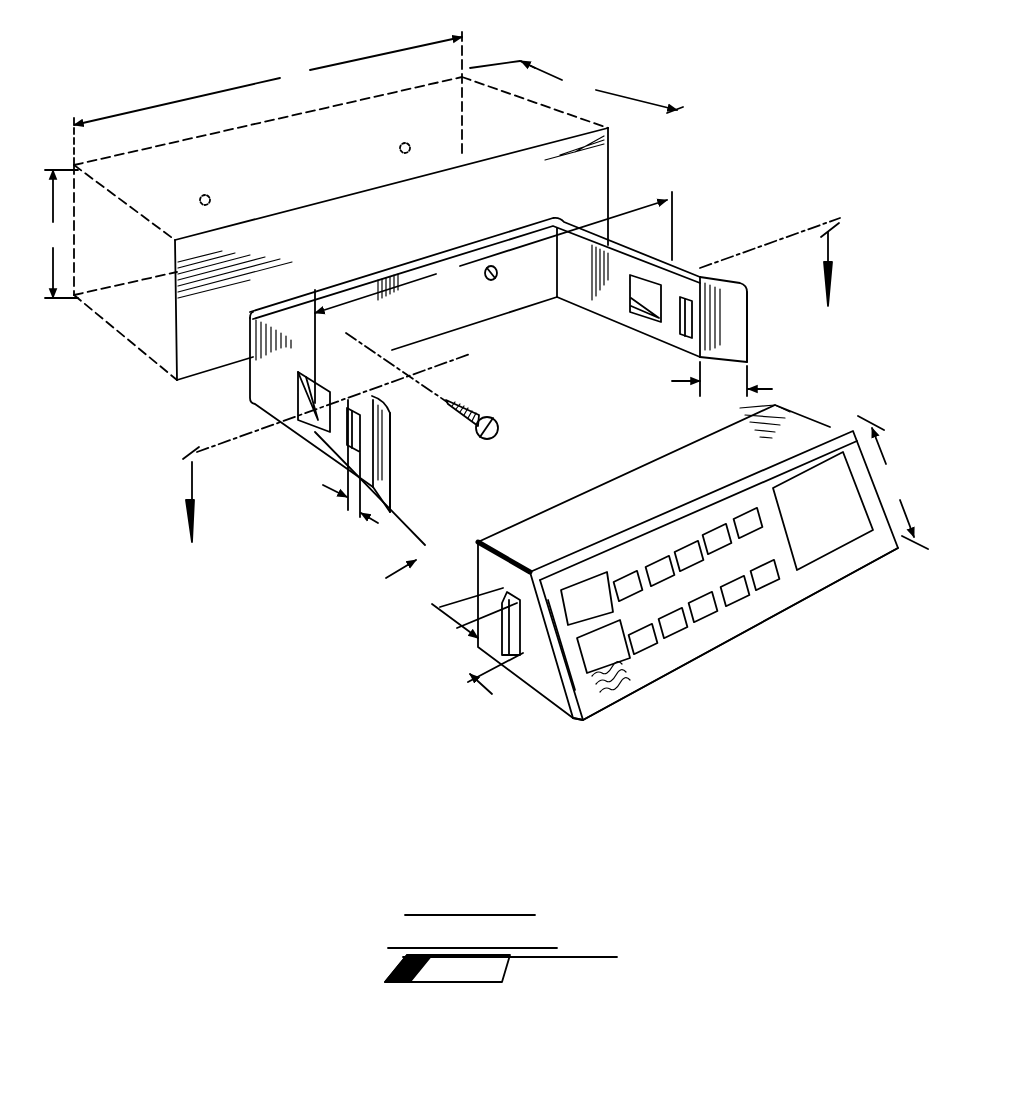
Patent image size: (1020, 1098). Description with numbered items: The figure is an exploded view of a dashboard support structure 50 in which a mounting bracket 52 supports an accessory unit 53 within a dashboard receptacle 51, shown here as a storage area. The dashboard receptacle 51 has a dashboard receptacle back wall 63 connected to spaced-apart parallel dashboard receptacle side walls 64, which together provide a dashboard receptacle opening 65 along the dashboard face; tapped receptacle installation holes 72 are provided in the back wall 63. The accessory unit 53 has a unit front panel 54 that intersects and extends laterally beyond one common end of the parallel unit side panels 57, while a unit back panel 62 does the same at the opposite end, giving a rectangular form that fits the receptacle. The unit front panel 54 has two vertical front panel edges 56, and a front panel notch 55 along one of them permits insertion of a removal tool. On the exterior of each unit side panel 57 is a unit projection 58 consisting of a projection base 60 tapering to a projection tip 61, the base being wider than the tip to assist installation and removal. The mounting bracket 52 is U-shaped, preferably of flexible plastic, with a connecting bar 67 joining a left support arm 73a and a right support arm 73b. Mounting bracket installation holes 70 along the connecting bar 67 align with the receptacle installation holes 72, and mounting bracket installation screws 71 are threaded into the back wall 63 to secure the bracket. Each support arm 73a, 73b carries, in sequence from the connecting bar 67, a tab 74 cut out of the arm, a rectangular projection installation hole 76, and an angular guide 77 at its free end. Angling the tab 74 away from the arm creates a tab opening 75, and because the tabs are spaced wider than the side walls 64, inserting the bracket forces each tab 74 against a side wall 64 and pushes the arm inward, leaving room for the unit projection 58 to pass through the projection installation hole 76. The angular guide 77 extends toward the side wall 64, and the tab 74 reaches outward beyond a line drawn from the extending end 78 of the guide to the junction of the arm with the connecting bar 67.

The dashboard support structure 50 is at (850, 318).
The dashboard receptacle 51 is at (590, 112).
The mounting bracket 52 is at (673, 265).
The accessory unit 53 is at (707, 603).
The unit front panel 54 is at (773, 603).
The front panel notch 55 is at (554, 648).
The front panel edges 56 is at (586, 720).
The unit side panels 57 is at (483, 581).
The unit projection 58 is at (518, 660).
The projection base 60 is at (530, 574).
The projection tip 61 is at (483, 581).
The unit back panel 62 is at (622, 472).
The dashboard receptacle back wall 63 is at (353, 120).
The dashboard receptacle side walls 64 is at (85, 312).
The dashboard receptacle opening 65 is at (195, 360).
The connecting bar 67 is at (408, 278).
The mounting bracket installation holes 70 is at (488, 270).
The mounting bracket installation screws 71 is at (500, 423).
The receptacle installation holes 72 is at (403, 142).
The left support arm 73a is at (270, 379).
The right support arm 73b is at (575, 296).
The tab 74 is at (298, 395).
The tab opening 75 is at (312, 418).
The projection installation hole 76 is at (345, 447).
The angular guide 77 is at (447, 528).
The extending end 78 is at (393, 443).